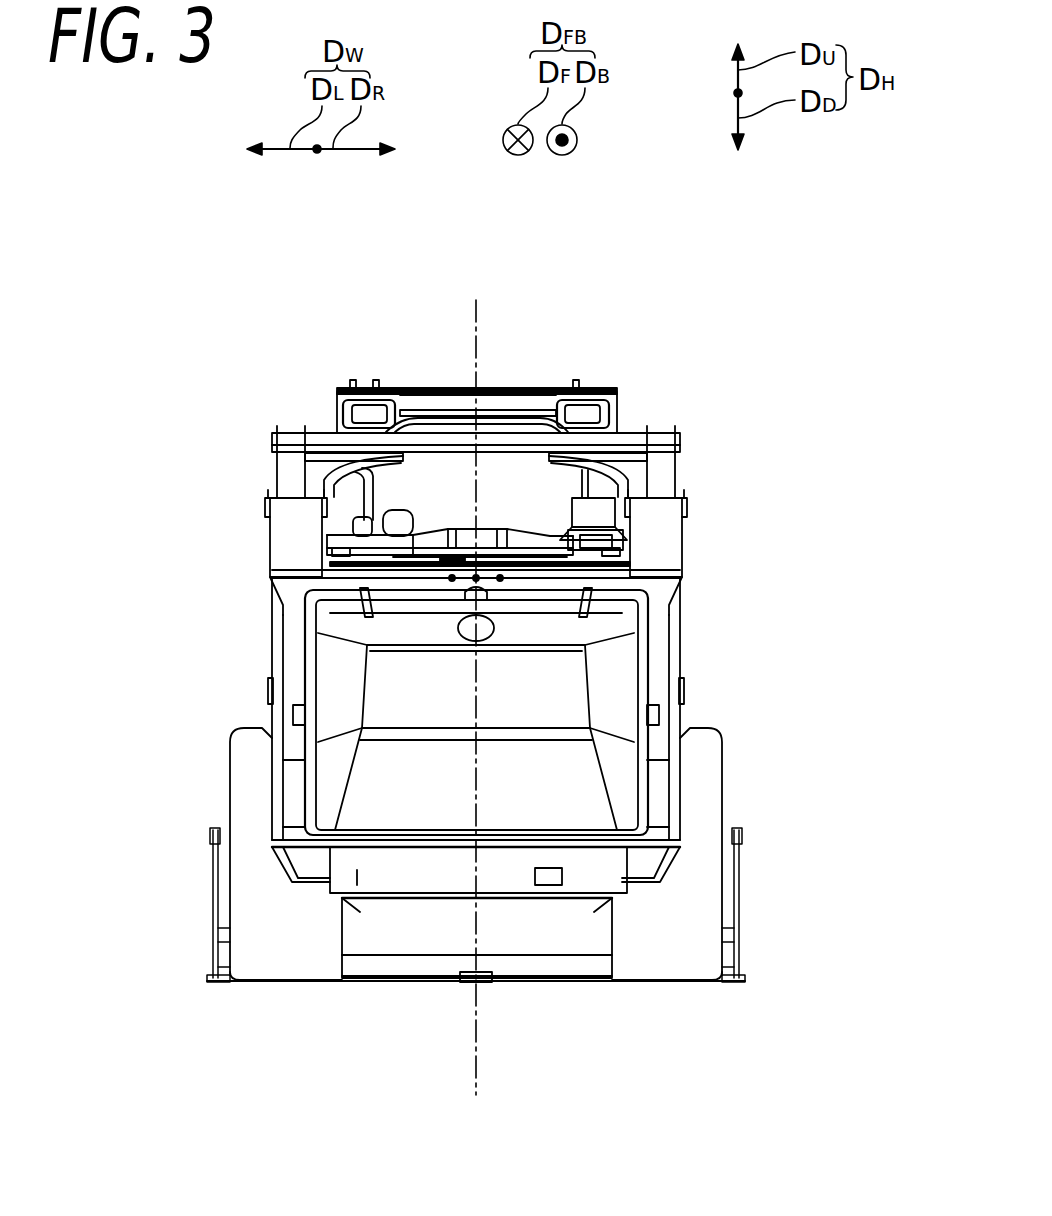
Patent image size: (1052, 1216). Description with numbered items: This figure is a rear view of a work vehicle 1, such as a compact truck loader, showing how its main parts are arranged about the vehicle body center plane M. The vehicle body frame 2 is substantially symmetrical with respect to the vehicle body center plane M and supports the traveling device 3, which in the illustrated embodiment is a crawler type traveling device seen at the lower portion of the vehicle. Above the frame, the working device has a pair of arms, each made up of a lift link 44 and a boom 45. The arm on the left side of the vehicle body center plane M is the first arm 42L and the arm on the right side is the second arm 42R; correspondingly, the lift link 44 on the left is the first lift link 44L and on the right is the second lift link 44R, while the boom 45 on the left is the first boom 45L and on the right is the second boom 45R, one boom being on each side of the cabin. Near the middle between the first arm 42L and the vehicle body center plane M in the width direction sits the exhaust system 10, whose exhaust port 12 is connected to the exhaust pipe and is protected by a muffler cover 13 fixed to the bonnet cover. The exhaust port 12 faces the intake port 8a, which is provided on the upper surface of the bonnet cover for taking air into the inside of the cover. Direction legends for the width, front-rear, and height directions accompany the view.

The work vehicle 1 is at (216, 415).
The vehicle body frame 2 is at (343, 893).
The traveling device 3 is at (259, 985).
The intake port 8a is at (437, 524).
The exhaust system 10 is at (400, 512).
The exhaust port 12 is at (490, 519).
The muffler cover 13 is at (490, 519).
The first arm 42L is at (136, 480).
The second arm 42R is at (825, 455).
The lift link 44 is at (292, 541).
The first lift link 44L is at (296, 552).
The second lift link 44R is at (656, 552).
The boom 45 is at (288, 470).
The first boom 45L is at (291, 462).
The second boom 45R is at (661, 462).
The vehicle body center plane M is at (480, 1002).